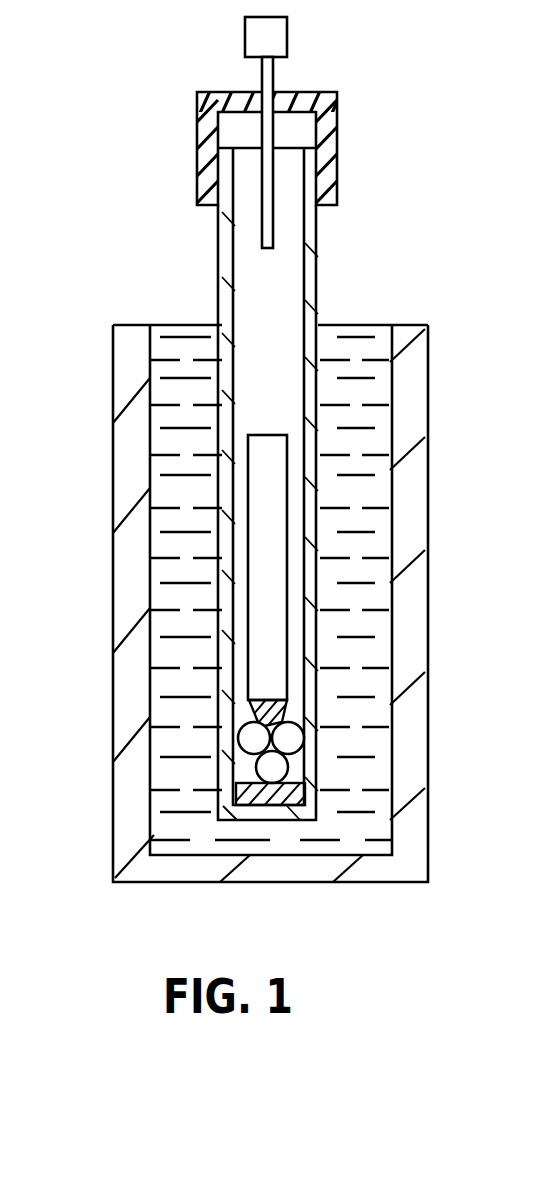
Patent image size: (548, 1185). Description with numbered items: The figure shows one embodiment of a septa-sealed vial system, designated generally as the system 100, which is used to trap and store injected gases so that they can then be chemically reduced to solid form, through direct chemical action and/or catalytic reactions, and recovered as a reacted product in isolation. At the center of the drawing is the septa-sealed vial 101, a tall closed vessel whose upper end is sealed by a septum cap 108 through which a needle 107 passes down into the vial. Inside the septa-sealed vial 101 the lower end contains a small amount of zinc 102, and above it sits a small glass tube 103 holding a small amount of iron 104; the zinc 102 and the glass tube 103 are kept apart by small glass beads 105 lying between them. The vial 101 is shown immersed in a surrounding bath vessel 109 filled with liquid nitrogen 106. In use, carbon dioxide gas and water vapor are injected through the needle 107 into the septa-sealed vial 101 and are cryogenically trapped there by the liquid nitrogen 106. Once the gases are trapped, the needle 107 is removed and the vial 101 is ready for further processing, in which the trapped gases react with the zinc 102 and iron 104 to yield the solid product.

The system 100 is at (128, 96).
The septa-sealed vial 101 is at (317, 287).
The zinc 102 is at (257, 808).
The glass tube 103 is at (273, 433).
The iron 104 is at (273, 702).
The glass beads 105 is at (290, 737).
The liquid nitrogen 106 is at (352, 828).
The needle 107 is at (276, 232).
The cap 108 is at (323, 93).
The bath vessel 109 is at (425, 537).